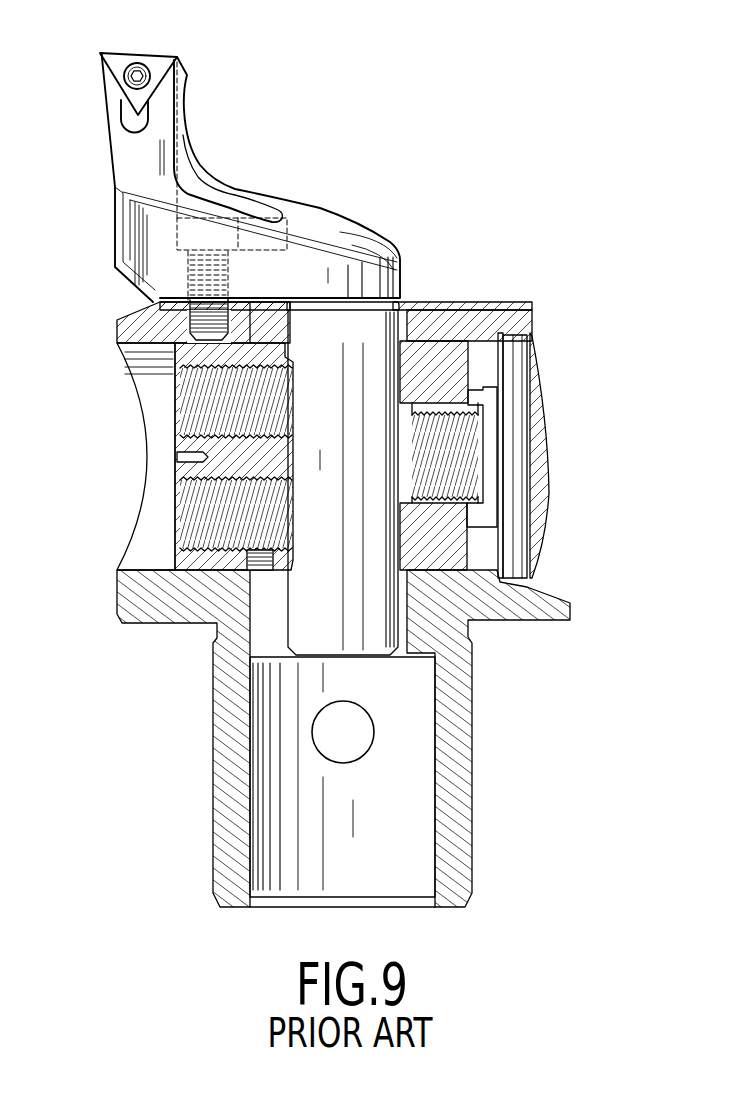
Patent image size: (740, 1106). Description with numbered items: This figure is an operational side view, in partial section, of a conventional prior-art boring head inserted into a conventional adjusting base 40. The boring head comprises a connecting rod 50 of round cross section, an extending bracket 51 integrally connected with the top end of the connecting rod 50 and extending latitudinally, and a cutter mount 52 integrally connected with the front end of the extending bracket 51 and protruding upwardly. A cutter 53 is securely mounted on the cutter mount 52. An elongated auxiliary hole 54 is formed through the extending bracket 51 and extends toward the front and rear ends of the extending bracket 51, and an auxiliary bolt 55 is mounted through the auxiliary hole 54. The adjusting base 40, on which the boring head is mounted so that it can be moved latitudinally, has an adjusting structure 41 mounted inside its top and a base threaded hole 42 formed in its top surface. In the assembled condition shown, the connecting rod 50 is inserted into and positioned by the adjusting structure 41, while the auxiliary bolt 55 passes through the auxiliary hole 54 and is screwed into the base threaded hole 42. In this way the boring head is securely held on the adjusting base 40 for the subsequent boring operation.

The adjusting base 40 is at (511, 770).
The adjusting structure 41 is at (586, 381).
The base threaded hole 42 is at (190, 320).
The connecting rod 50 is at (375, 637).
The extending bracket 51 is at (343, 233).
The cutter mount 52 is at (112, 103).
The cutter 53 is at (152, 62).
The auxiliary hole 54 is at (283, 232).
The auxiliary bolt 55 is at (204, 236).